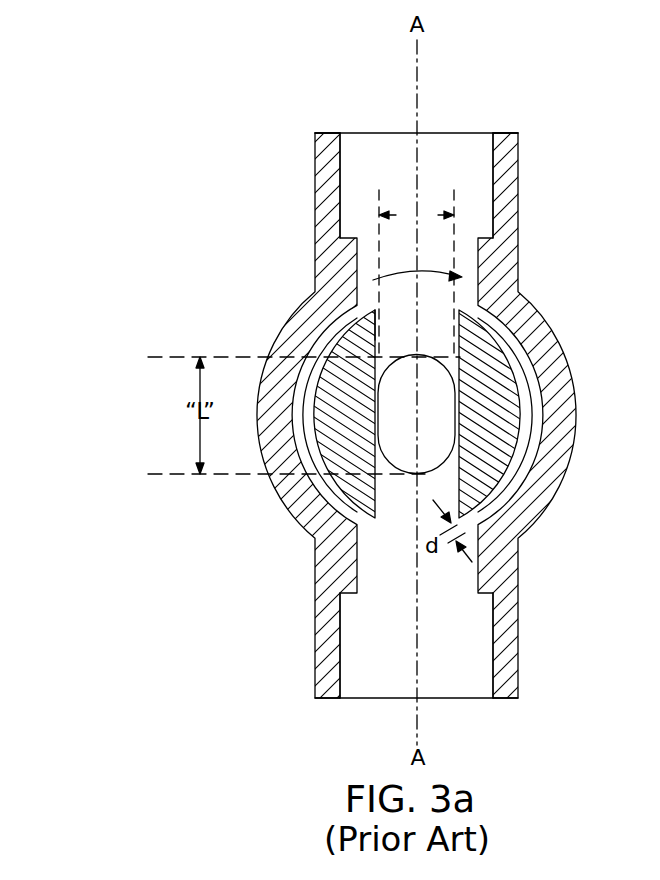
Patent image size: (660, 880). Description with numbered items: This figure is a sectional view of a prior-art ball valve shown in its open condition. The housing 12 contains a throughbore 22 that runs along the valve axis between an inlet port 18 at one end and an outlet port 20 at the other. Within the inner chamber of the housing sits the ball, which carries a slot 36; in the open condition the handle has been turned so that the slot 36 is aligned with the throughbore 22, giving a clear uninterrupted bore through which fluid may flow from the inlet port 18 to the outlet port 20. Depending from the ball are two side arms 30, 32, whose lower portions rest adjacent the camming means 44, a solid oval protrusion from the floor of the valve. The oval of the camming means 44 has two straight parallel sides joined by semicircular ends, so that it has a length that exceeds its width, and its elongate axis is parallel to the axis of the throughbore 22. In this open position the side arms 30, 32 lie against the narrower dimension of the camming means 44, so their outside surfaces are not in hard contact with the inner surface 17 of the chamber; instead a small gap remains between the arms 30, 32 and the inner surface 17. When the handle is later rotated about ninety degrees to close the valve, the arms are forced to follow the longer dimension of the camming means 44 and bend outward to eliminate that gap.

The housing 12 is at (533, 322).
The inner surface 17 is at (535, 388).
The inlet port 18 is at (466, 133).
The outlet port 20 is at (356, 694).
The throughbore 22 is at (370, 147).
The side arm 30 is at (356, 343).
The side arm 32 is at (502, 425).
The slot 36 is at (443, 313).
The camming means 44 is at (418, 474).